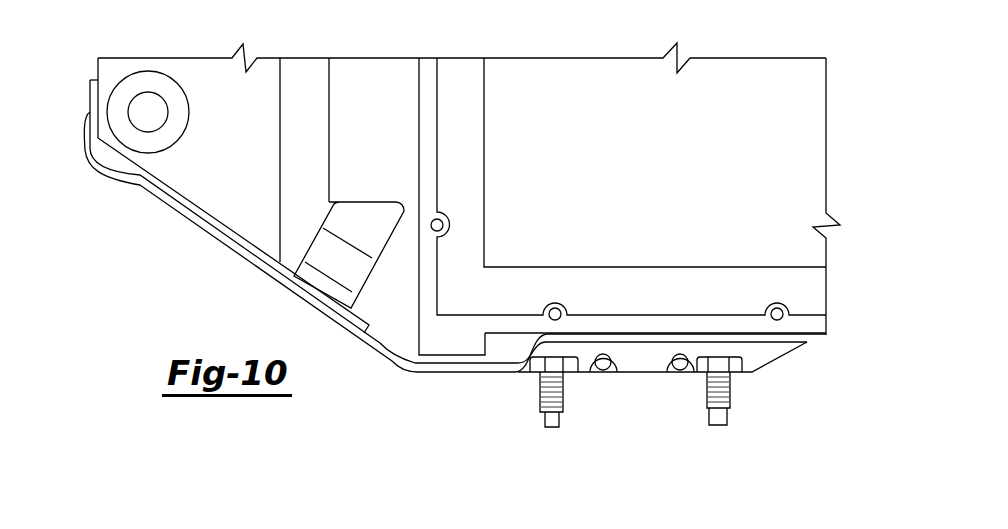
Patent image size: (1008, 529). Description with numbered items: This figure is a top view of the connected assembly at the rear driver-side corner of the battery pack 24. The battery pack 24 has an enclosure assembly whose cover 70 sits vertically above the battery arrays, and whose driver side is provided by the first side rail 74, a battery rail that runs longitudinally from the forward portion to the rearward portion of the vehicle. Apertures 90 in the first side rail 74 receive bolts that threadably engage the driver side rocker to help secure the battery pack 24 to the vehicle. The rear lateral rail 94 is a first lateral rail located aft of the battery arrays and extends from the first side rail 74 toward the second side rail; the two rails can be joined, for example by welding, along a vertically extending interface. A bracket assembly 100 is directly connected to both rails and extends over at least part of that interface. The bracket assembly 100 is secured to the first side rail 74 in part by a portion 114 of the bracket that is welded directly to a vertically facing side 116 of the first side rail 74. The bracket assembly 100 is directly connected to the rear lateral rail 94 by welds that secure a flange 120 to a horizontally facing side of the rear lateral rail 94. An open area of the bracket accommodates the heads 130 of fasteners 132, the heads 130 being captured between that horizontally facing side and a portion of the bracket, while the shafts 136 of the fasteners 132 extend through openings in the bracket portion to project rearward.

The battery pack 24 is at (793, 110).
The cover 70 is at (805, 191).
The first side rail 74 is at (355, 88).
The apertures 90 is at (136, 110).
The rear lateral rail 94 is at (826, 287).
The bracket assembly 100 is at (650, 373).
The portion 114 is at (367, 214).
The vertically facing side 116 is at (404, 78).
The flange 120 is at (770, 352).
The heads 130 is at (584, 373).
The fasteners 132 is at (547, 418).
The shafts 136 is at (542, 391).